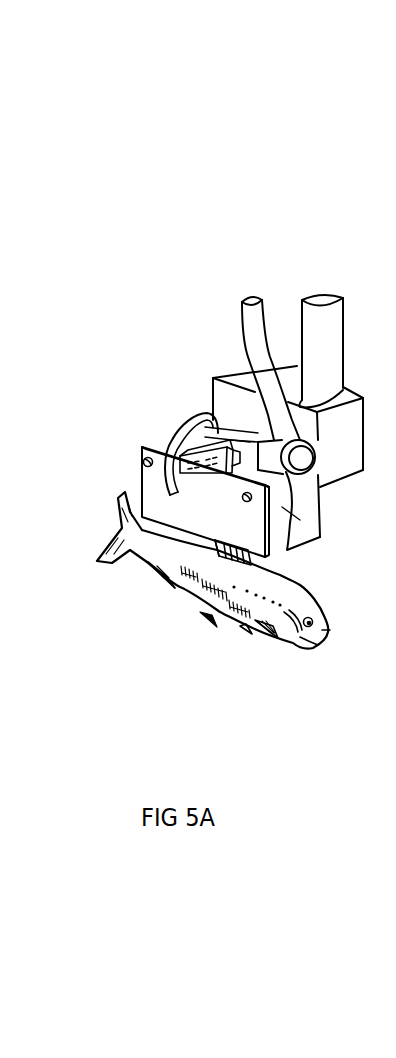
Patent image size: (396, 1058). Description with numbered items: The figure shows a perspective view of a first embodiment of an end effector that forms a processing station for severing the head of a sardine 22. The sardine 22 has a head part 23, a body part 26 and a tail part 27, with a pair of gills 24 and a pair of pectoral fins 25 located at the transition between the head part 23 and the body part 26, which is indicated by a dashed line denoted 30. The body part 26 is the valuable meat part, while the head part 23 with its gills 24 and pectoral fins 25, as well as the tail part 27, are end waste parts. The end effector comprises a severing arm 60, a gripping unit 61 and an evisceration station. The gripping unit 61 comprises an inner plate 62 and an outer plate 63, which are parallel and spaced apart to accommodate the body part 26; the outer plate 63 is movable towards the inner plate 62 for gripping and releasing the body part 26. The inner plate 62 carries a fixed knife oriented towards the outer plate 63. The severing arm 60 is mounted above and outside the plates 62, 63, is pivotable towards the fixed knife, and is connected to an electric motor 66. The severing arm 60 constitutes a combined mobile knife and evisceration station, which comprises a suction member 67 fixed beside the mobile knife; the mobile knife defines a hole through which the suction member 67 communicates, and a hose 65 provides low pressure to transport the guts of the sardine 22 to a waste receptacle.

The hose 65 is at (257, 337).
The electric motor 66 is at (197, 428).
The suction member 67 is at (176, 447).
The severing arm 60 is at (166, 480).
The outer plate 63 is at (155, 497).
The gripping unit 61 is at (310, 518).
The inner plate 62 is at (282, 507).
The sardine 22 is at (187, 609).
The tail part 27 is at (120, 560).
The body part 26 is at (162, 590).
The pectoral fin 25 is at (250, 630).
The gill 24 is at (277, 640).
The head part 23 is at (298, 637).
The transition between head part and body part 30 is at (304, 590).